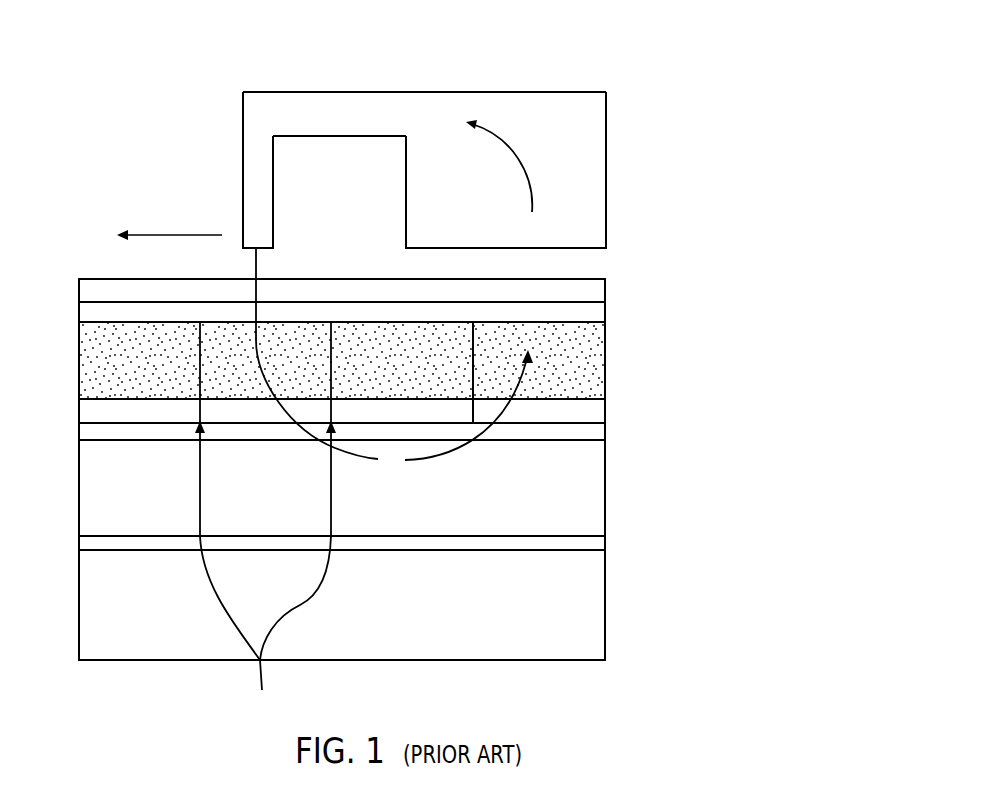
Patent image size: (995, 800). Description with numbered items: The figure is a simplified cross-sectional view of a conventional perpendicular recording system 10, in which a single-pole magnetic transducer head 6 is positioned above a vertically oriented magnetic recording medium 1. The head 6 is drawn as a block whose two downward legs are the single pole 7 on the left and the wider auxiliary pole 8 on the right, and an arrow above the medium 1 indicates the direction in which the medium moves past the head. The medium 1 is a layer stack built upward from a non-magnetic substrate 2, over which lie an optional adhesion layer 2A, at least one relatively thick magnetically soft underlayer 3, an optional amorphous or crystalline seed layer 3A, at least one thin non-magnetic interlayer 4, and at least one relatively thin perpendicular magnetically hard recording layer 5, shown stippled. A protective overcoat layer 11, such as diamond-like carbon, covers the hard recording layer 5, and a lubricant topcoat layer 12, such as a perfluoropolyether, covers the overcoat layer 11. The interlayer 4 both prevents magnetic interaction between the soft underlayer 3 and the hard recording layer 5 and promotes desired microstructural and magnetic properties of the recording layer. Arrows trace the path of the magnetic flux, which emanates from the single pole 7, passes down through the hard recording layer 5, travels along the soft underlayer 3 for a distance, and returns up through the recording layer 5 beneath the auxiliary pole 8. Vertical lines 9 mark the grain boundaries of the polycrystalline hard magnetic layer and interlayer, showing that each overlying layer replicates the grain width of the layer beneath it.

The vertically oriented magnetic recording medium 1 is at (60, 457).
The non-magnetic substrate 2 is at (619, 617).
The adhesion layer 2A is at (619, 542).
The magnetically soft underlayer 3 is at (619, 483).
The seed layer 3A is at (619, 433).
The non-magnetic interlayer 4 is at (619, 406).
The perpendicular magnetically hard recording layer 5 is at (619, 349).
The single-pole magnetic transducer head 6 is at (309, 86).
The single pole 7 is at (224, 163).
The auxiliary pole 8 is at (632, 146).
The vertical lines 9 is at (265, 523).
The perpendicular recording system 10 is at (591, 68).
The protective overcoat layer 11 is at (619, 313).
The lubricant topcoat layer 12 is at (619, 285).